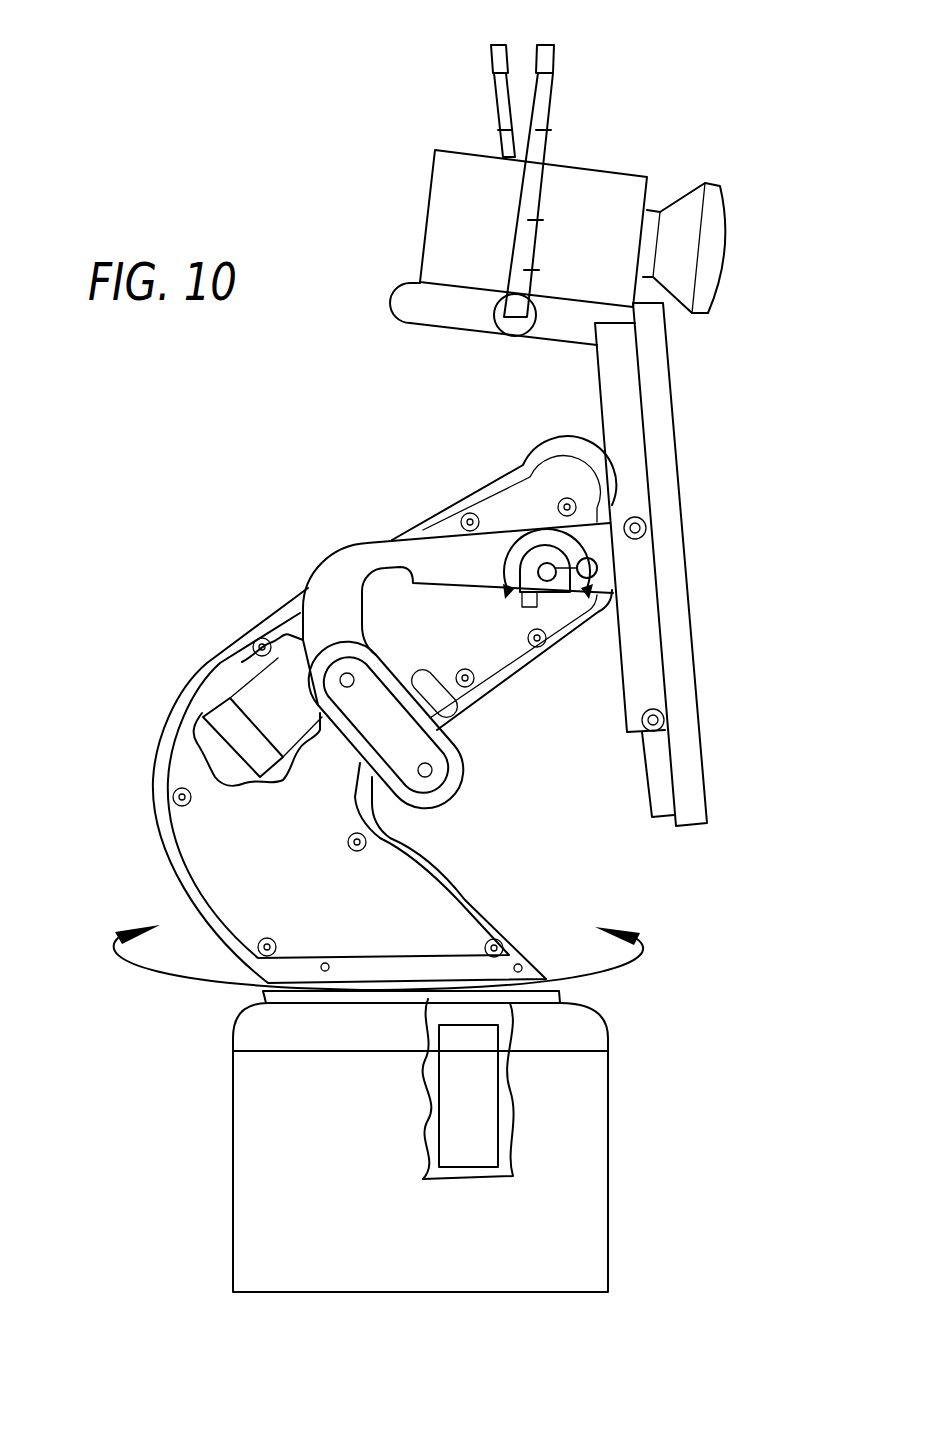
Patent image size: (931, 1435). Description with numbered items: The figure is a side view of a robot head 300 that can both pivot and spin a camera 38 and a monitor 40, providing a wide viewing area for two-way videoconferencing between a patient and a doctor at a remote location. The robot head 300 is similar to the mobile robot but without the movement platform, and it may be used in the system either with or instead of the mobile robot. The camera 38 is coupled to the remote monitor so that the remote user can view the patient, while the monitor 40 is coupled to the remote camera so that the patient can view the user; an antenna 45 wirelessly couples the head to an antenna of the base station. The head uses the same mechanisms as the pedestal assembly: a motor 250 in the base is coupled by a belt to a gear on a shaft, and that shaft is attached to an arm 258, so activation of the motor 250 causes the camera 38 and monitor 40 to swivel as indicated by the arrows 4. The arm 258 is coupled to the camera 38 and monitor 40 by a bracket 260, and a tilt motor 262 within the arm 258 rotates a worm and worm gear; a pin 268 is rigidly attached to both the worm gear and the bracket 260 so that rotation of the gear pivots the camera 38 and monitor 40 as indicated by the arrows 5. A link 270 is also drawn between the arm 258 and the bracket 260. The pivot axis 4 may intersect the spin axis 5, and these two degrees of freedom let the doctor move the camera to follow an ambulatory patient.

The robot head 300 is at (202, 528).
The camera 38 is at (608, 197).
The antenna 45 is at (540, 117).
The monitor 40 is at (695, 668).
The arm 258 is at (227, 868).
The bracket 260 is at (388, 550).
The tilt motor 262 is at (270, 690).
The pin 268 is at (547, 572).
The connecting link 270 is at (437, 780).
The motor 250 is at (485, 1091).
The spin axis 5 is at (535, 564).
The pivot axis 4 is at (385, 957).